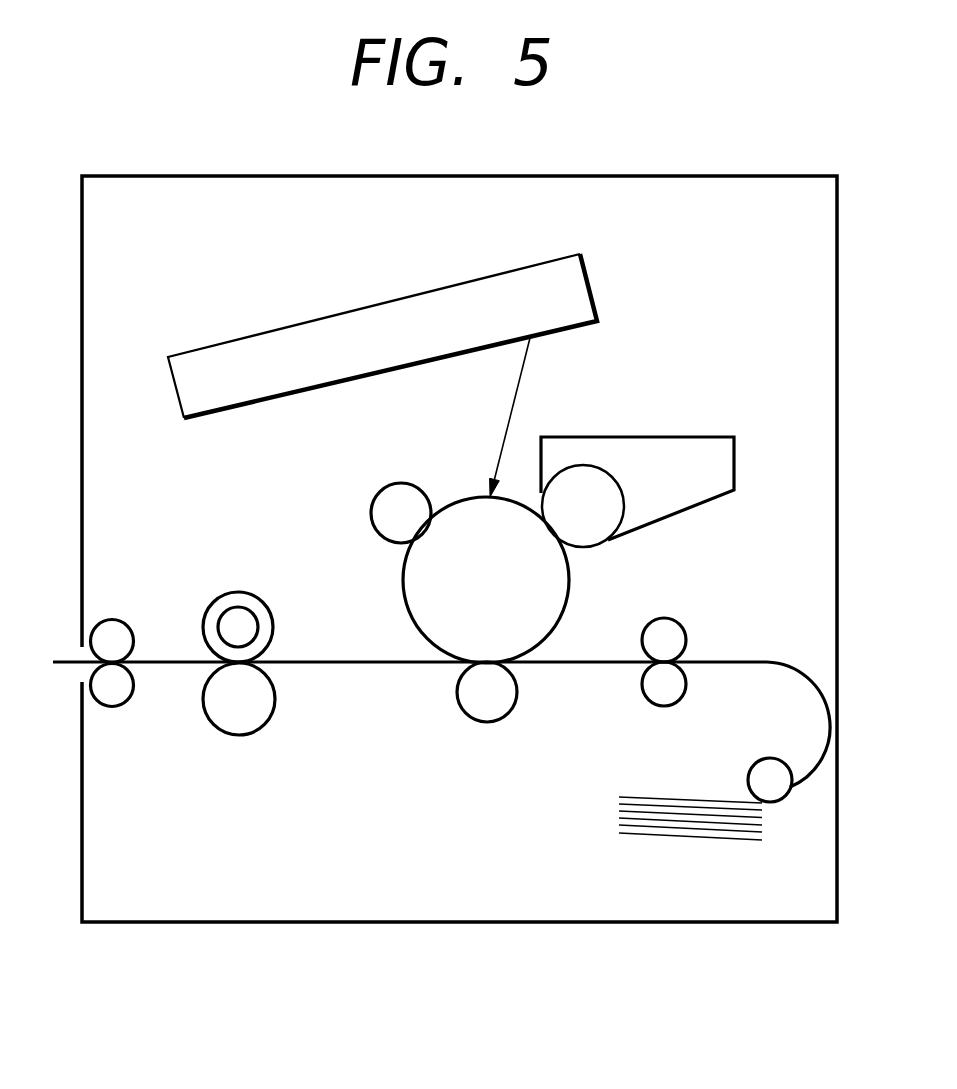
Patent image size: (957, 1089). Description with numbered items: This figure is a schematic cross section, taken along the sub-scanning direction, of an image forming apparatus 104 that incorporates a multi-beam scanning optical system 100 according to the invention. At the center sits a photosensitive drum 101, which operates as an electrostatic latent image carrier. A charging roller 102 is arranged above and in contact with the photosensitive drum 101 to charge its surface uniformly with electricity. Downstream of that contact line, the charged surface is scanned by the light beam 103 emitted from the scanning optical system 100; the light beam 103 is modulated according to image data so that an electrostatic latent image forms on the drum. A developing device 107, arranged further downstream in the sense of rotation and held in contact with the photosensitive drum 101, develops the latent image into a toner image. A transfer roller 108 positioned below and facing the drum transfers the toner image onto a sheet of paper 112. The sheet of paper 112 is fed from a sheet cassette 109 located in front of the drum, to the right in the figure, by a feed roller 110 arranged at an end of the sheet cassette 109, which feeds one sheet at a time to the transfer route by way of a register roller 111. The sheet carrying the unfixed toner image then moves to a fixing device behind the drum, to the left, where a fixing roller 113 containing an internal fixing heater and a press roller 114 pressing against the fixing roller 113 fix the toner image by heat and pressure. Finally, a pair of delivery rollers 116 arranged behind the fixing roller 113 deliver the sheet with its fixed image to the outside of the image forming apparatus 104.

The multi-beam scanning optical system 100 is at (574, 292).
The photosensitive drum 101 is at (552, 585).
The charging roller 102 is at (393, 498).
The light beam 103 is at (517, 390).
The image forming apparatus 104 is at (763, 175).
The developing device 107 is at (663, 448).
The transfer roller 108 is at (483, 713).
The sheet cassette 109 is at (657, 837).
The feed roller 110 is at (767, 763).
The register roller 111 is at (665, 623).
The sheet of paper 112 is at (390, 660).
The fixing roller 113 is at (240, 595).
The press roller 114 is at (238, 727).
The delivery rollers 116 is at (110, 632).